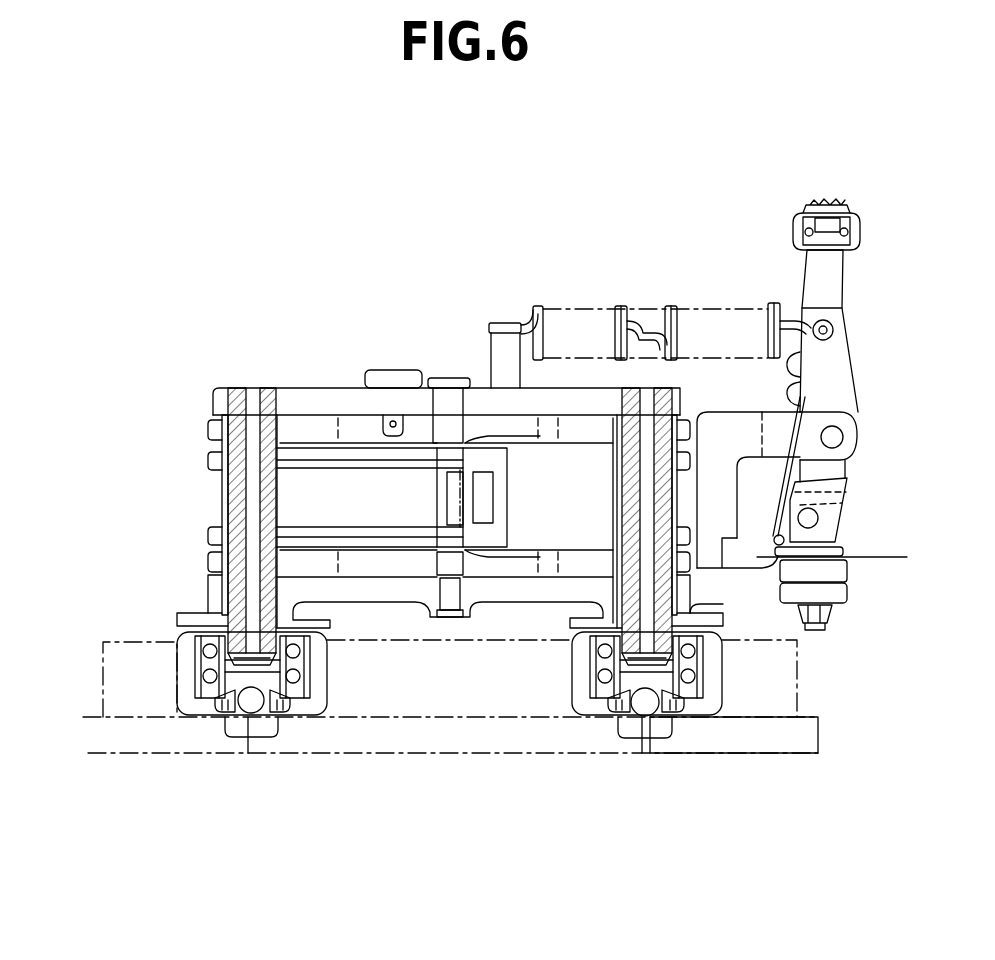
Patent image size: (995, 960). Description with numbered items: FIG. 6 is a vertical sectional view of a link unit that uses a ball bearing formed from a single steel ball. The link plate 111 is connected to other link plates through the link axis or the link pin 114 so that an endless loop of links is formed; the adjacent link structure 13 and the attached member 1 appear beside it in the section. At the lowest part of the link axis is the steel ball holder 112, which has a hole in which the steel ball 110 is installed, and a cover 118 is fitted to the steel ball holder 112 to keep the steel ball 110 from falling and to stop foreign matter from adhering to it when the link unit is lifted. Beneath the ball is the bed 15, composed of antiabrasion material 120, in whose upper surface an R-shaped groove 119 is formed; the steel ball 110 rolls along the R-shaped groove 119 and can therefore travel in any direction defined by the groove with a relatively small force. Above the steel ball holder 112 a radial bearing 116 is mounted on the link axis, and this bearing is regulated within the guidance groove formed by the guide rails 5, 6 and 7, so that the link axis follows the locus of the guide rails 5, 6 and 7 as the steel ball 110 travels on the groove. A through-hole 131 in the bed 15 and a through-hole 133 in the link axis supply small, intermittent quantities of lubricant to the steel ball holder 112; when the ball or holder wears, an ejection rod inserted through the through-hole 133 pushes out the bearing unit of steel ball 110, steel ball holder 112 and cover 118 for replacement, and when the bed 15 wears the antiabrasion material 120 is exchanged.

The lever arm 1 is at (895, 557).
The guide rail 5 is at (448, 700).
The guide rail 6 is at (125, 678).
The guide rail 7 is at (778, 690).
The side plate 13 is at (240, 503).
The bed 15 is at (768, 733).
The steel ball 110 is at (642, 707).
The link plate 111 is at (308, 407).
The steel ball holder 112 is at (290, 712).
The link pin 114 is at (440, 378).
The radial bearing 116 is at (193, 655).
The cover 118 is at (600, 708).
The R-shaped groove 119 is at (265, 727).
The antiabrasion material 120 is at (222, 722).
The through-hole 131 is at (252, 712).
The through-hole 133 is at (252, 398).